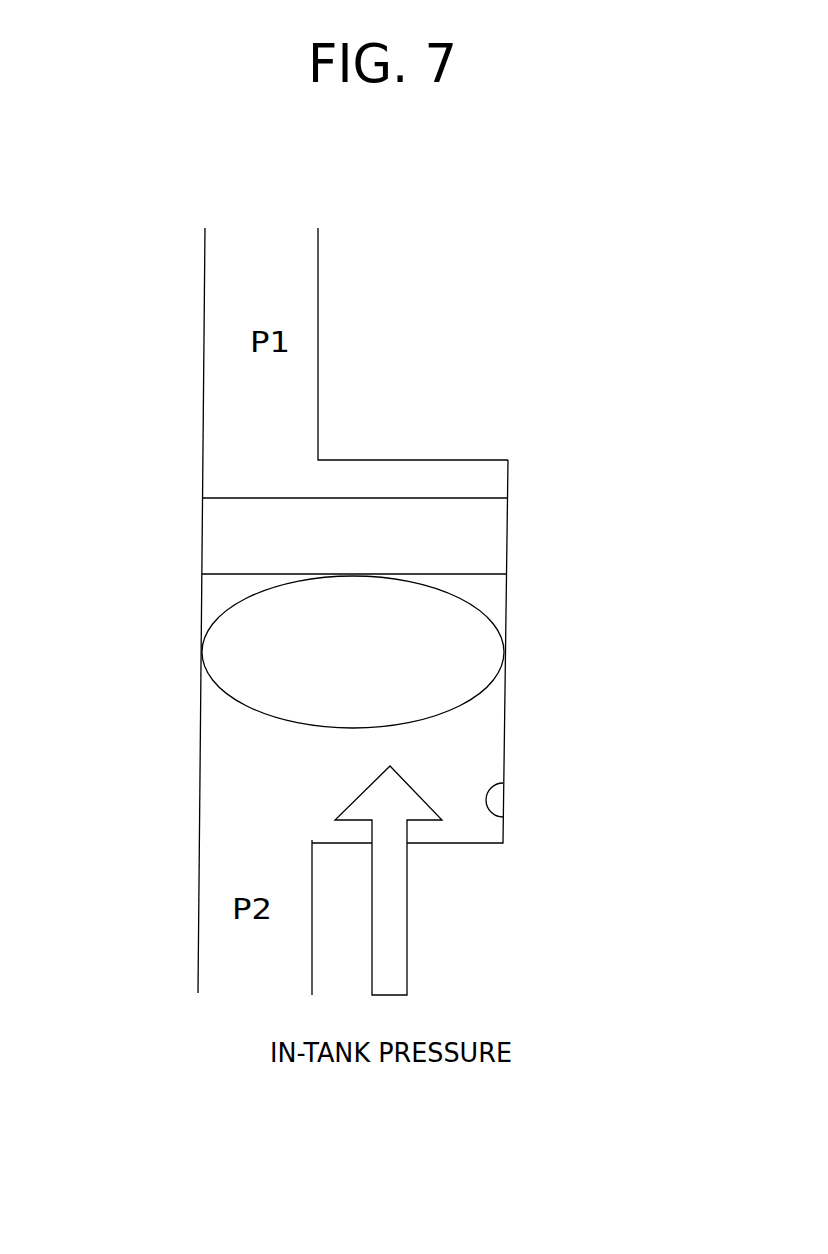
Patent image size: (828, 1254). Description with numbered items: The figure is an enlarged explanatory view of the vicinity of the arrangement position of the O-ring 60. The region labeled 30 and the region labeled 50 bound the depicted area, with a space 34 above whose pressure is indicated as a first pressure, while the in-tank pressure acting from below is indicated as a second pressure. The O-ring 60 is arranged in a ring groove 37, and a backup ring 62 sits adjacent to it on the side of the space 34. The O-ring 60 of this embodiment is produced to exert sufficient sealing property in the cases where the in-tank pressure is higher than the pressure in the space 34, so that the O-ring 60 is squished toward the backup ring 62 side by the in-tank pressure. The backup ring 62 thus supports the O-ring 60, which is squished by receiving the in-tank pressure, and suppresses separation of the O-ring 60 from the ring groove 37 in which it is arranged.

The fuel tank 30 is at (92, 637).
The space 34 is at (283, 400).
The ring groove 37 is at (503, 781).
The valve chamber 50 is at (634, 680).
The O-ring 60 is at (454, 653).
The backup ring 62 is at (483, 530).